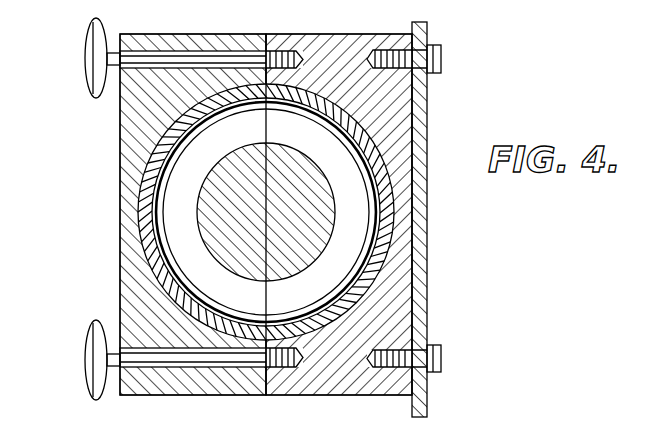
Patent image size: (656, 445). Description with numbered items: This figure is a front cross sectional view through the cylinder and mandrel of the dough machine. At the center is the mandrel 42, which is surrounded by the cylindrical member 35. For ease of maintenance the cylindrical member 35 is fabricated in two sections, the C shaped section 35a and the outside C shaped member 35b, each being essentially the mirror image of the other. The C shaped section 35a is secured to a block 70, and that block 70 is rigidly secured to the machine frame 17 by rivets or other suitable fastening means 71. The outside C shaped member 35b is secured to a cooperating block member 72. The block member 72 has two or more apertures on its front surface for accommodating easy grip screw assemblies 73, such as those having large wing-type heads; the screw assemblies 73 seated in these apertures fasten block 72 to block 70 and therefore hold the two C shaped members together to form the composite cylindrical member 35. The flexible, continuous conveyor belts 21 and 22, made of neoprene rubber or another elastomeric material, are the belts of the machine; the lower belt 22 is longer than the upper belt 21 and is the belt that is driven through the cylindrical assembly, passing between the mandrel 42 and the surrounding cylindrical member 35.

The frame assembly 17 is at (425, 215).
The upper conveyor belt 21 is at (150, 178).
The lower conveyor belt 22 is at (360, 270).
The cylindrical member 35 is at (357, 128).
The C shaped section 35a is at (352, 283).
The outside C shaped member 35b is at (145, 250).
The mandrel 42 is at (255, 170).
The block 70 is at (365, 20).
The fastening means 71 is at (443, 56).
The cooperating block member 72 is at (210, 33).
The easy grip screw assemblies 73 is at (85, 58).